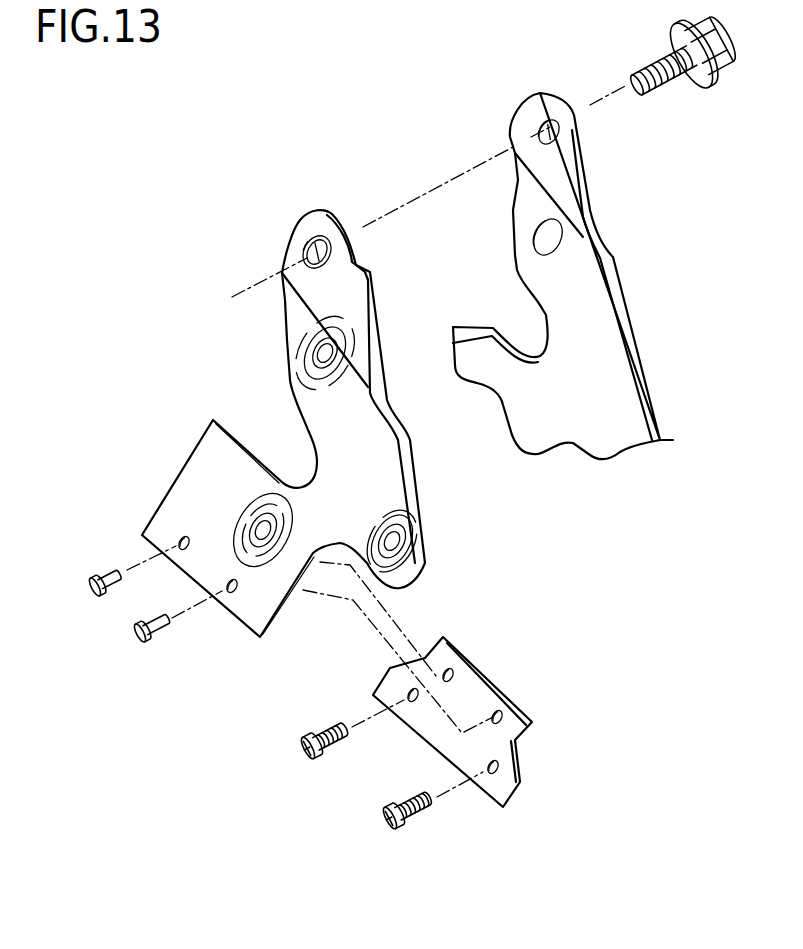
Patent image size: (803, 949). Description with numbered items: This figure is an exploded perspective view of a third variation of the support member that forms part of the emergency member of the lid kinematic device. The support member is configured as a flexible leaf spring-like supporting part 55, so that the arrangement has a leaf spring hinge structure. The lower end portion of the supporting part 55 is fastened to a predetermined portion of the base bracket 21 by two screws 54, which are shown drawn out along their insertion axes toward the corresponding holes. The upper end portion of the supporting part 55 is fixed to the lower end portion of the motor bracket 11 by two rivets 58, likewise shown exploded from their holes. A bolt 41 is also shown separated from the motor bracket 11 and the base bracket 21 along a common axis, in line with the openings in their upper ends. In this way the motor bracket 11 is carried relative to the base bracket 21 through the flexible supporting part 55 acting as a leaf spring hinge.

The motor bracket 11 is at (373, 468).
The base bracket 21 is at (580, 302).
The bolt 41 is at (647, 58).
The screw 54 is at (323, 728).
The supporting part 55 is at (480, 678).
The rivet 58 is at (110, 570).